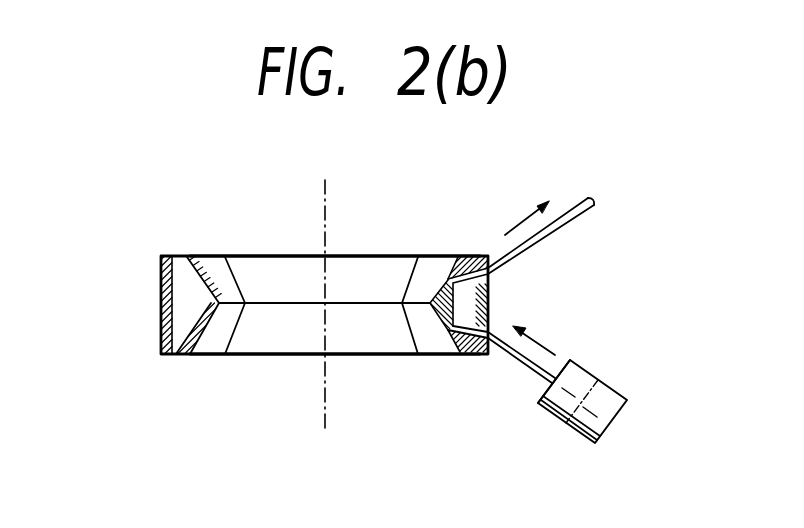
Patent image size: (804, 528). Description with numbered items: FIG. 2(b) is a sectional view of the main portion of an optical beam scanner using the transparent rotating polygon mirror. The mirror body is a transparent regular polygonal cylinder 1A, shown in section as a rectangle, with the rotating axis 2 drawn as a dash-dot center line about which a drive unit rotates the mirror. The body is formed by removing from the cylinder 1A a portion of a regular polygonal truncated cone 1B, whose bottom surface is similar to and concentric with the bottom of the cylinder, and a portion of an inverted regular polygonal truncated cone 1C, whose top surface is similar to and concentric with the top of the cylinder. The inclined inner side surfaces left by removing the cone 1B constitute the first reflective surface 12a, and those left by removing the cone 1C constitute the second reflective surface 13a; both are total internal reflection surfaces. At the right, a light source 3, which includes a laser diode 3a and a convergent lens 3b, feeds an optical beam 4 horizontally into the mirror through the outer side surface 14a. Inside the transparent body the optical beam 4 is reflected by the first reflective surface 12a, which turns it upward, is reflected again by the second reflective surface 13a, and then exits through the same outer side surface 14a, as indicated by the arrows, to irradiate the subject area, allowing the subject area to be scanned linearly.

The transparent regular polygonal cylinder 1A is at (160, 303).
The regular polygonal truncated cone 1B is at (253, 345).
The regular polygonal truncated cone 1C is at (253, 268).
The rotating axis 2 is at (325, 208).
The light source 3 is at (618, 390).
The laser diode 3a is at (608, 430).
The convergent lens 3b is at (578, 372).
The optical beam 4 is at (590, 208).
The first reflective surface 12a is at (440, 342).
The second reflective surface 13a is at (433, 285).
The outer side surface 14a is at (492, 290).